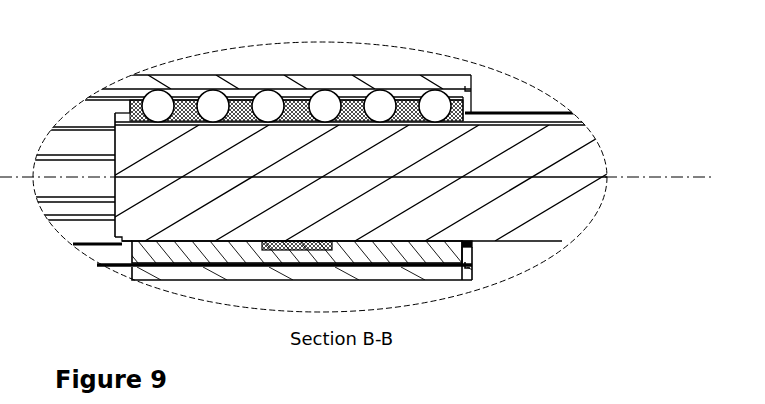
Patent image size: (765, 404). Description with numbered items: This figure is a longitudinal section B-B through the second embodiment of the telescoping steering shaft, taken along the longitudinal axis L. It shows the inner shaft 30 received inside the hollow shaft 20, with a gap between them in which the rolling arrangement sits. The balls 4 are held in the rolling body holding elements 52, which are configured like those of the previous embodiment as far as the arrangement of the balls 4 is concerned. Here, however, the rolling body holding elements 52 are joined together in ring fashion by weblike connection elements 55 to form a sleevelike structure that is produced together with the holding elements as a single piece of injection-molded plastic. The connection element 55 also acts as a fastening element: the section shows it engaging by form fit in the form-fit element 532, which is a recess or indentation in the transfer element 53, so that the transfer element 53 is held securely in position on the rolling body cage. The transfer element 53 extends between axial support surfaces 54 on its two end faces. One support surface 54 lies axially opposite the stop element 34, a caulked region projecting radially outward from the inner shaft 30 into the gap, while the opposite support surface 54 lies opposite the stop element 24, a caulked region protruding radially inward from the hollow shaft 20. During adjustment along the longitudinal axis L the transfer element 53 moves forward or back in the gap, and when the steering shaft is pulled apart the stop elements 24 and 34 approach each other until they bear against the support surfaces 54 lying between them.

The ball 4 is at (325, 105).
The hollow shaft 20 is at (400, 80).
The stop element 24 is at (471, 268).
The inner shaft 30 is at (560, 150).
The stop element 34 is at (121, 240).
The rolling body holding element 52 is at (297, 108).
The transfer element 53 is at (420, 263).
The axial support surface 54 is at (128, 248).
The connection element 55 is at (258, 267).
The form-fit element 532 is at (292, 249).
The longitudinal axis L is at (694, 176).